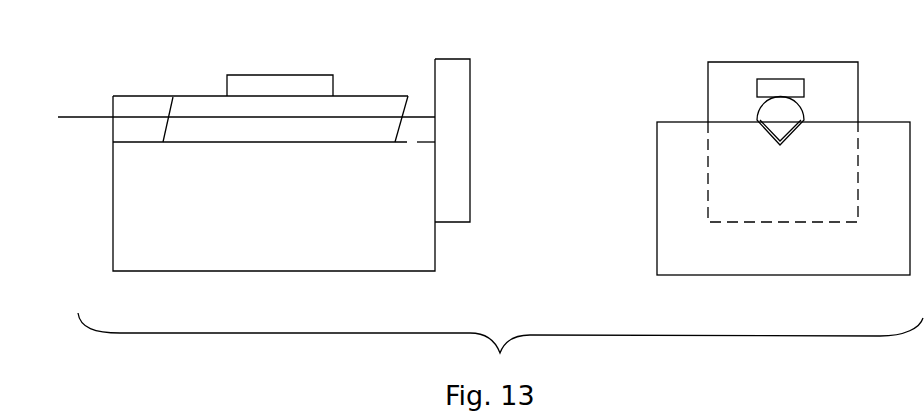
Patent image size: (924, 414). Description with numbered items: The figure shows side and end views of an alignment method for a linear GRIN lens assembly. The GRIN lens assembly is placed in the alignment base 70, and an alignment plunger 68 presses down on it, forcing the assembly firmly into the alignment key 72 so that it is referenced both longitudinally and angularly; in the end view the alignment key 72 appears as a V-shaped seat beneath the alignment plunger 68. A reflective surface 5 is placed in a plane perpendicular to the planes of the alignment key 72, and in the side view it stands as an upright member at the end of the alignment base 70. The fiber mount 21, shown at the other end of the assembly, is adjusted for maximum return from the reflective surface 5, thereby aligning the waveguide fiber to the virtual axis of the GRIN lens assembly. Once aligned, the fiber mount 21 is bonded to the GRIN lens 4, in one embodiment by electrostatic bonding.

The GRIN lens 4 is at (212, 112).
The reflective surface 5 is at (438, 115).
The fiber mount 21 is at (153, 110).
The alignment plunger 68 is at (285, 83).
The alignment base 70 is at (405, 243).
The alignment key 72 is at (788, 140).